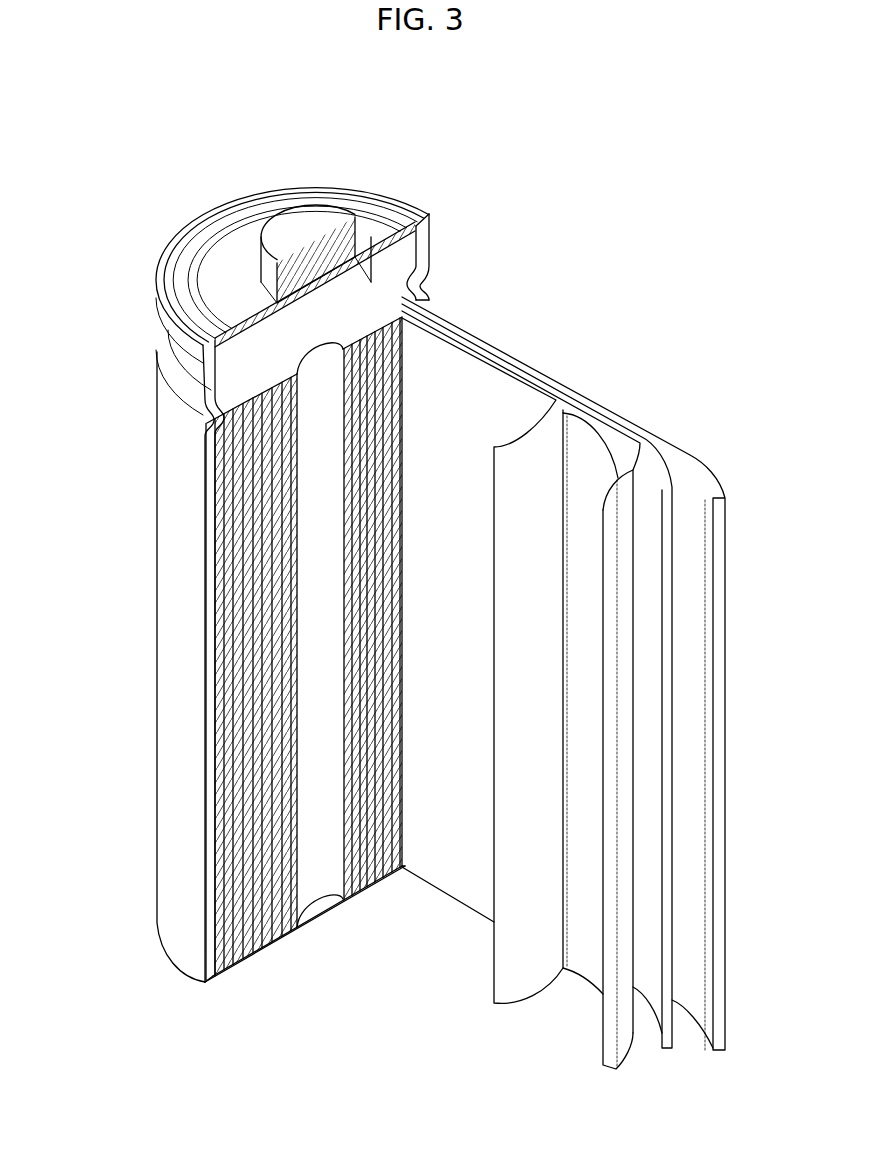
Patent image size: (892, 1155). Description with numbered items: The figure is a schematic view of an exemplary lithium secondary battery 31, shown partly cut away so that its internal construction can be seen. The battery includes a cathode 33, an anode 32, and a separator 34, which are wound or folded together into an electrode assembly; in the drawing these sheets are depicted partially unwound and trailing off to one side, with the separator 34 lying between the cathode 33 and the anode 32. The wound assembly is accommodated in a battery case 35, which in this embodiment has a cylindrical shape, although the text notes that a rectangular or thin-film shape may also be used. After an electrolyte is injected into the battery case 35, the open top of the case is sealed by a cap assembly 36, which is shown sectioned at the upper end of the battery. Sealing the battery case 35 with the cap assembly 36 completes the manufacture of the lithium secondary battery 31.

The lithium secondary battery 31 is at (529, 221).
The anode 32 is at (714, 476).
The cathode 33 is at (588, 422).
The separator 34 is at (503, 366).
The battery case 35 is at (172, 634).
The cap assembly 36 is at (292, 240).